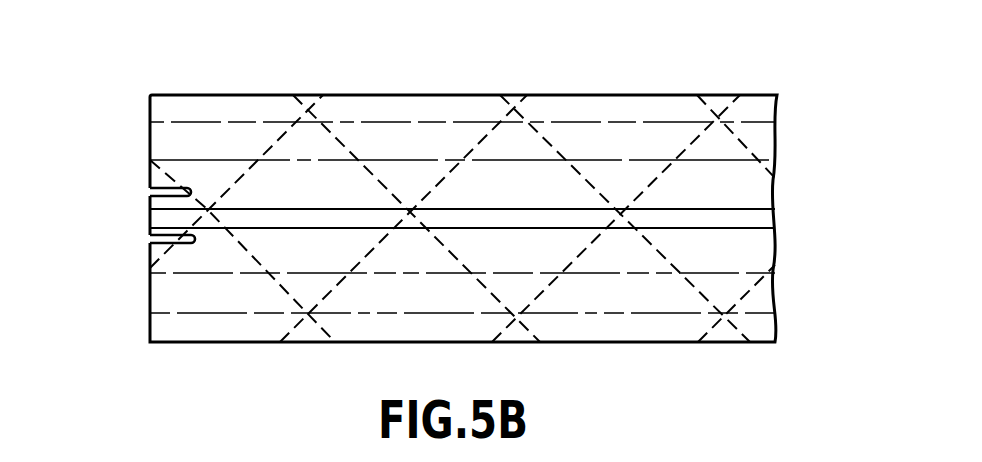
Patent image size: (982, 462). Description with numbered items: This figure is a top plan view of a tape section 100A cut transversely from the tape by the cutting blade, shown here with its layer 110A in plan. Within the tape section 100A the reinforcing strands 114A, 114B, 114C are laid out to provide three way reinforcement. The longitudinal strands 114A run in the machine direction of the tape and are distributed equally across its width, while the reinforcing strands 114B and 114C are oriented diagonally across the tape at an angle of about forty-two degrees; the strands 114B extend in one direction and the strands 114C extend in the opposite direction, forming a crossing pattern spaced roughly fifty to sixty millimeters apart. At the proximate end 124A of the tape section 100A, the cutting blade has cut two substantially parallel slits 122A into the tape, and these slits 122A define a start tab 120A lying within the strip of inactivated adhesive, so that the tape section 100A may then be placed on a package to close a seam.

The tape section 100A is at (550, 103).
The panel body 110A is at (462, 104).
The longitudinal reinforcing strands 114A is at (752, 151).
The diagonal reinforcing strands 114B is at (707, 335).
The diagonal reinforcing strands 114C is at (501, 99).
The start tab 120A is at (149, 213).
The slits 122A is at (153, 191).
The proximate end 124A is at (149, 300).